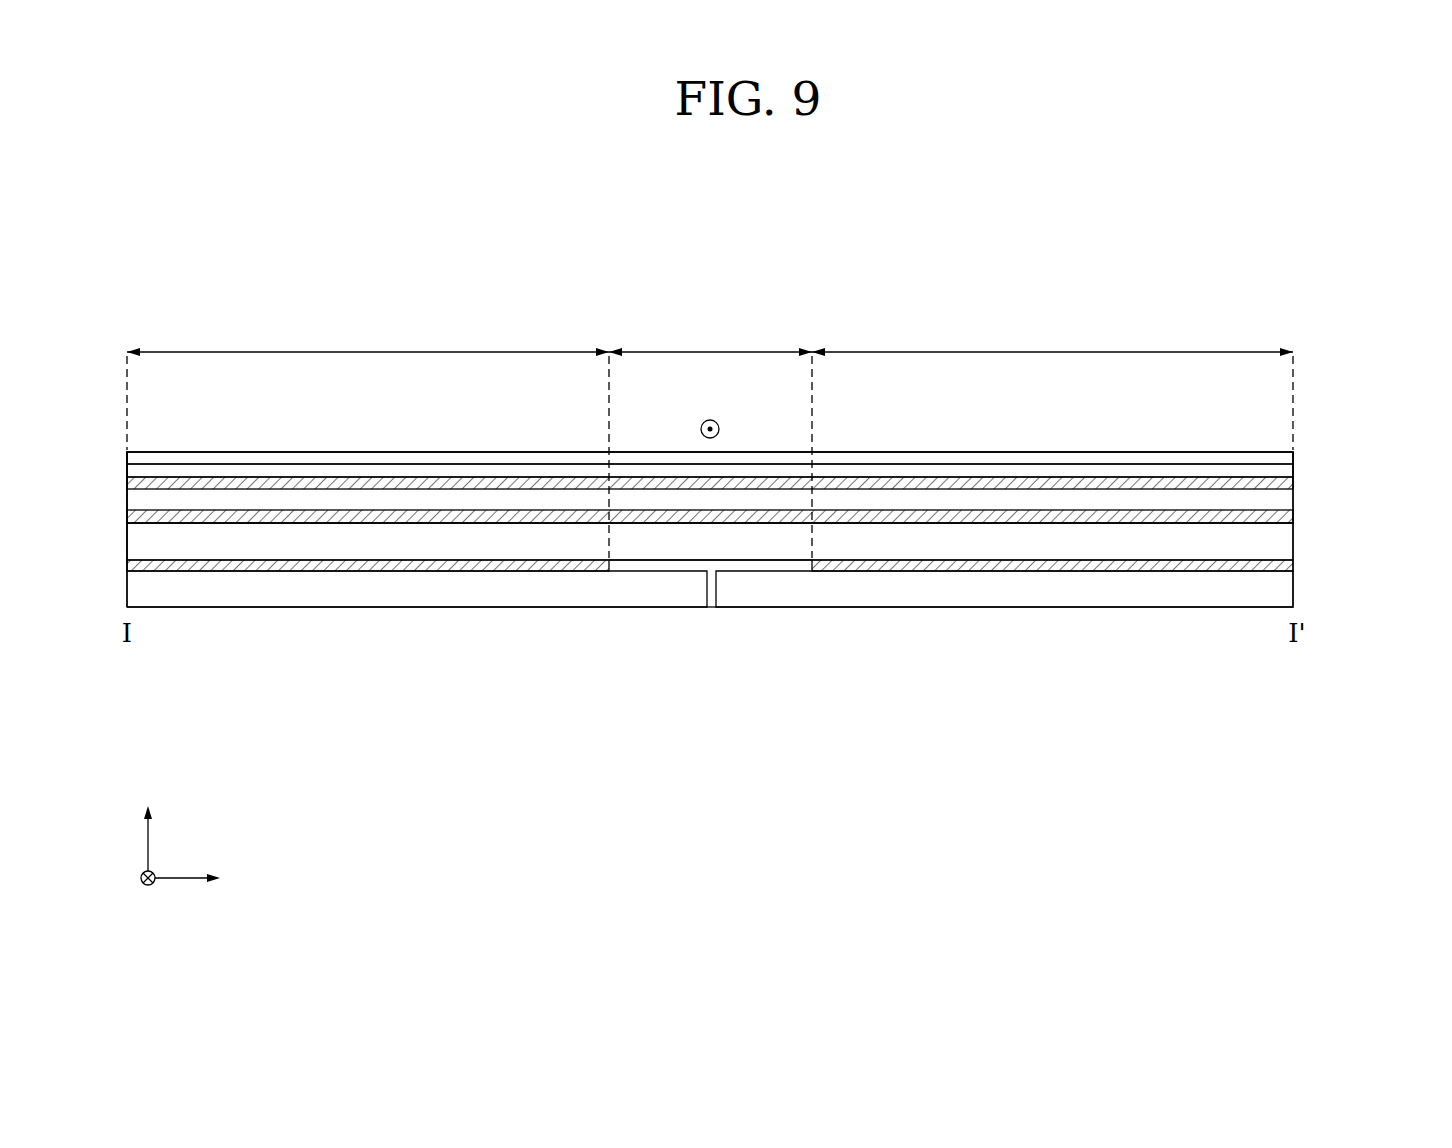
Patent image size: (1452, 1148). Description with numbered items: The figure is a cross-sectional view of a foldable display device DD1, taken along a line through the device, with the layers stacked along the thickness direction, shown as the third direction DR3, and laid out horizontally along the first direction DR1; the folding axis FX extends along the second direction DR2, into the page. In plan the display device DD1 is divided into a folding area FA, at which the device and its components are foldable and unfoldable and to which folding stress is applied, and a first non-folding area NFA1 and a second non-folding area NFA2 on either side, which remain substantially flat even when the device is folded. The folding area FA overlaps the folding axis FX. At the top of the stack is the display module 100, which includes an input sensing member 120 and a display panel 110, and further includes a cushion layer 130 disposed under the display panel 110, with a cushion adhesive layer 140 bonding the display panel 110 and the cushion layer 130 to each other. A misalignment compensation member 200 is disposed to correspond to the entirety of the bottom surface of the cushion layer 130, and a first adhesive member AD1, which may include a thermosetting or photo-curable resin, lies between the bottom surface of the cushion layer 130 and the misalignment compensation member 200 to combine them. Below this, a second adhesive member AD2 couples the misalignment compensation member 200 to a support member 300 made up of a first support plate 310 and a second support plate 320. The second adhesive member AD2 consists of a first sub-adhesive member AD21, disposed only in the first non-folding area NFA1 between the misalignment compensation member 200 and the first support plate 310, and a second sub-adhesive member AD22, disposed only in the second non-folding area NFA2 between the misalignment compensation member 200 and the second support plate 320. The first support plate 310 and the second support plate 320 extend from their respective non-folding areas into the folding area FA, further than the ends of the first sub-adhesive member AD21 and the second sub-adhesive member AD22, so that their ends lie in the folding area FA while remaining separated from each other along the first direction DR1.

The display device DD1 is at (1250, 288).
The display module 100 is at (1385, 433).
The input sensing member 120 is at (1283, 458).
The display panel 110 is at (1283, 470).
The cushion adhesive layer 140 is at (1283, 483).
The cushion layer 130 is at (1283, 510).
The first adhesive member AD1 is at (1280, 538).
The second adhesive member AD2 is at (710, 685).
The first sub-adhesive member AD21 is at (1052, 662).
The second sub-adhesive member AD22 is at (550, 571).
The misalignment compensation member 200 is at (756, 647).
The support member 300 is at (710, 648).
The first support plate 310 is at (1004, 625).
The second support plate 320 is at (642, 595).
The folding area FA is at (710, 439).
The first non-folding area NFA1 is at (1052, 385).
The second non-folding area NFA2 is at (368, 385).
The folding axis FX is at (710, 413).
The first direction DR1 is at (210, 878).
The second direction DR2 is at (147, 897).
The third direction DR3 is at (147, 824).